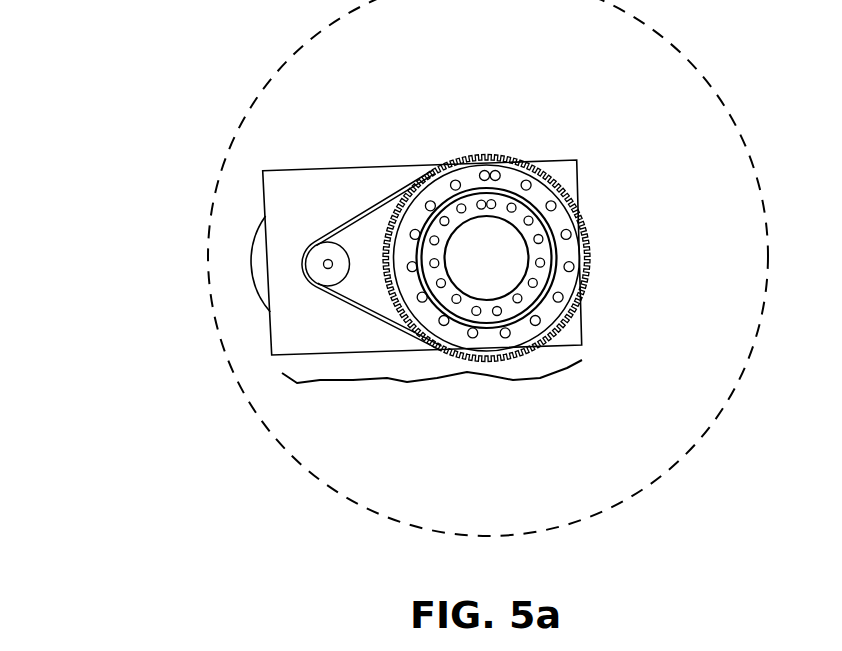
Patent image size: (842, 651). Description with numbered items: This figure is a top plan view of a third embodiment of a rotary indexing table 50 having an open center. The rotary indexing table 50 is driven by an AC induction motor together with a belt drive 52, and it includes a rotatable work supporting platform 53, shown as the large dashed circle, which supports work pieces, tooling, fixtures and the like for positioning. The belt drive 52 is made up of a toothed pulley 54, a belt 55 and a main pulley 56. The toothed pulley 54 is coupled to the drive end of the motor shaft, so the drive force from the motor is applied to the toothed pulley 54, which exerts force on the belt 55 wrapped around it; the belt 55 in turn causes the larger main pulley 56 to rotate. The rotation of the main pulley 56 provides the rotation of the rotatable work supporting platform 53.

The rotary indexing table 50 is at (107, 277).
The belt drive 52 is at (416, 293).
The rotatable work supporting platform 53 is at (573, 473).
The toothed pulley 54 is at (315, 258).
The belt 55 is at (373, 210).
The main pulley 56 is at (587, 247).